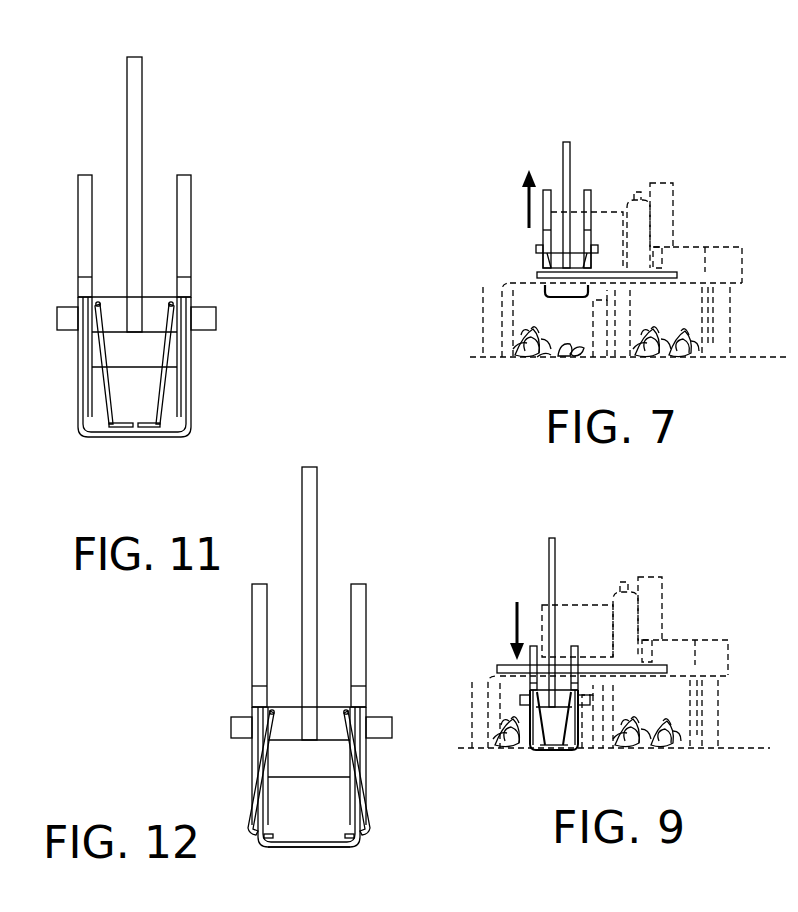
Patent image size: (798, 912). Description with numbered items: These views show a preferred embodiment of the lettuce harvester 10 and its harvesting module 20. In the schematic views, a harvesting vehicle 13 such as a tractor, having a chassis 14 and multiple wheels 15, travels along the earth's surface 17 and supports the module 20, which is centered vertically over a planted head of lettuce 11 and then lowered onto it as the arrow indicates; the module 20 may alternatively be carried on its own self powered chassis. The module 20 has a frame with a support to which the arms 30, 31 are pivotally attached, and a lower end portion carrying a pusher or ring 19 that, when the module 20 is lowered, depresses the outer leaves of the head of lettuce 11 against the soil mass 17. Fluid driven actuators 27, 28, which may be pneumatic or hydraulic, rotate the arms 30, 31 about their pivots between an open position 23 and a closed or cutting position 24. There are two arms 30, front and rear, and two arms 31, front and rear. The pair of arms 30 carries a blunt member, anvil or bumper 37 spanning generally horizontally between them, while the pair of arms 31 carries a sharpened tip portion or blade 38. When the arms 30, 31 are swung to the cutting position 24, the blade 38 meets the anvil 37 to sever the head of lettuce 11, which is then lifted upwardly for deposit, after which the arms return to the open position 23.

In FIG. 7, the lettuce harvester 10 is at (695, 168).
In FIG. 9, the lettuce harvester 10 is at (678, 582).
In FIG. 7, the head of lettuce 11 is at (534, 352).
In FIG. 9, the head of lettuce 11 is at (520, 750).
In FIG. 7, the harvesting vehicle 13 is at (665, 252).
In FIG. 9, the harvesting vehicle 13 is at (675, 640).
In FIG. 7, the chassis 14 is at (722, 290).
In FIG. 9, the chassis 14 is at (715, 683).
In FIG. 9, the wheels 15 is at (470, 690).
In FIG. 7, the earth's surface 17 is at (472, 355).
In FIG. 9, the earth's surface 17 is at (748, 748).
In FIG. 12, the pusher or ring 19 is at (300, 845).
In FIG. 11, the harvester module 20 is at (197, 135).
In FIG. 12, the harvester module 20 is at (367, 604).
In FIG. 7, the harvester module 20 is at (545, 262).
In FIG. 9, the harvester module 20 is at (555, 644).
In FIG. 12, the open position 23 is at (211, 730).
In FIG. 11, the closed or cutting position 24 is at (217, 247).
In FIG. 11, the fluid driven actuator 27 is at (57, 318).
In FIG. 11, the fluid driven actuator 28 is at (210, 316).
In FIG. 11, the arm 30 is at (106, 398).
In FIG. 11, the arm 31 is at (162, 396).
In FIG. 11, the blunt member, anvil or bumper 37 is at (118, 428).
In FIG. 12, the blunt member, anvil or bumper 37 is at (270, 836).
In FIG. 11, the sharpened tip portion or blade 38 is at (150, 428).
In FIG. 12, the sharpened tip portion or blade 38 is at (310, 848).